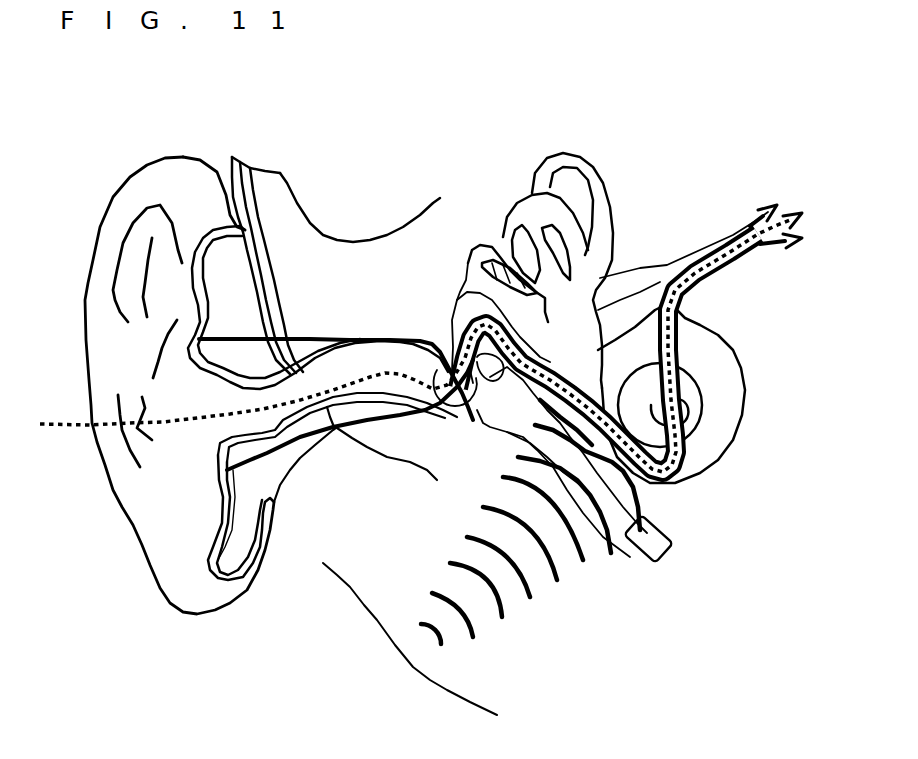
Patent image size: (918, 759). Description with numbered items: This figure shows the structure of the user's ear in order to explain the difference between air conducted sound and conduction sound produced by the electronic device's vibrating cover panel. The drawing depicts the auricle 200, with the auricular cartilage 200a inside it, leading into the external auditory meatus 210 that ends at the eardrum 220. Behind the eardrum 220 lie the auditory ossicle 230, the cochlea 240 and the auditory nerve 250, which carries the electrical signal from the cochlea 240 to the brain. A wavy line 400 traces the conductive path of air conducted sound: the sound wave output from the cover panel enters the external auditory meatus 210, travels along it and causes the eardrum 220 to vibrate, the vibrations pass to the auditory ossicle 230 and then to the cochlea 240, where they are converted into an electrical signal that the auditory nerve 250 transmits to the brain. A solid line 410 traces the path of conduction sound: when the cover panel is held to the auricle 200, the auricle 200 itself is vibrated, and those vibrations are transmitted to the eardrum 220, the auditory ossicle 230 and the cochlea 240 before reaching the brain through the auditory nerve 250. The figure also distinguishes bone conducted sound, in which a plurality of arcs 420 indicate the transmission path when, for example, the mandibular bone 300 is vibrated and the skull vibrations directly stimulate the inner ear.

The auricle 200 is at (179, 357).
The auricular cartilage 200a is at (318, 392).
The external auditory meatus 210 is at (337, 341).
The eardrum 220 is at (399, 523).
The auditory ossicle 230 is at (549, 343).
The cochlea 240 is at (672, 414).
The auditory nerve 250 is at (683, 248).
The mandibular bone 300 is at (410, 658).
The wavy line 400 is at (421, 350).
The solid line 410 is at (250, 455).
The arcs 420 is at (547, 538).